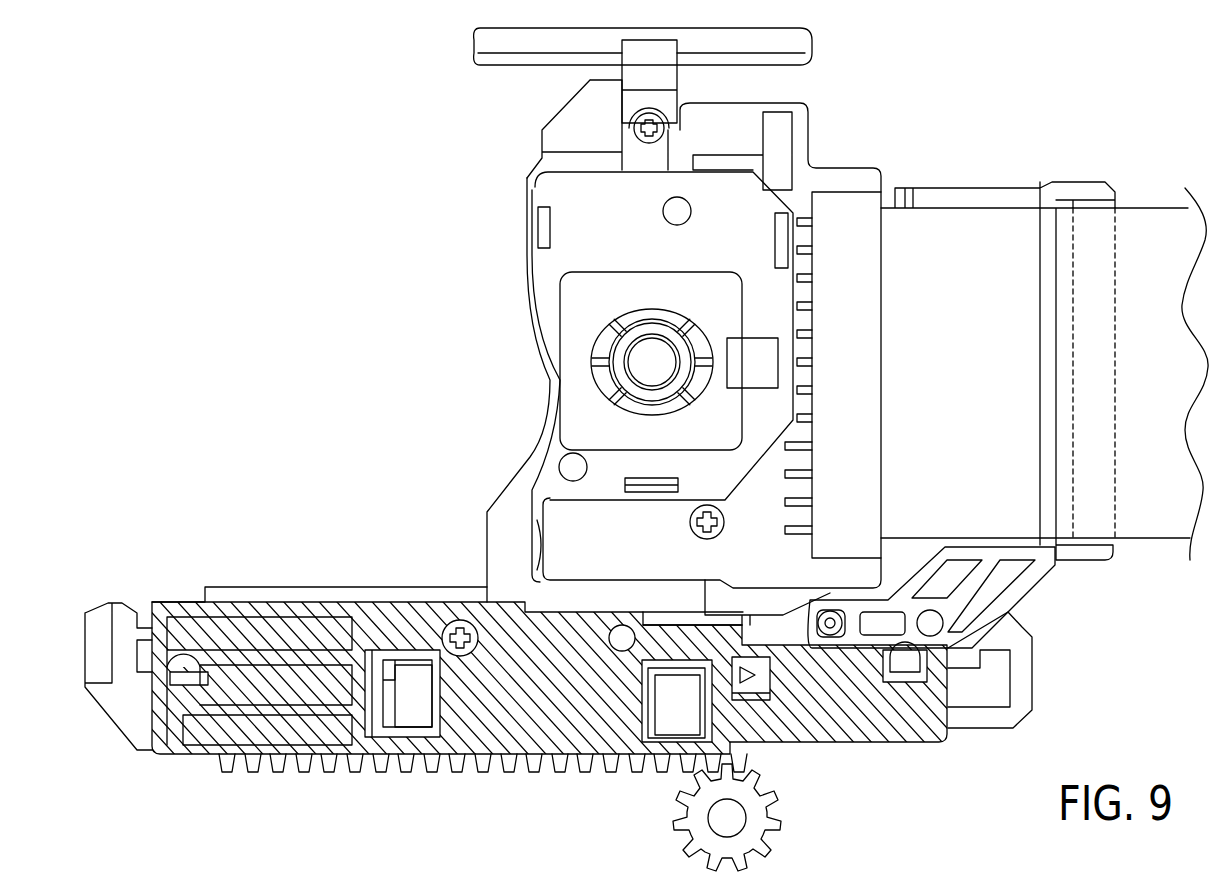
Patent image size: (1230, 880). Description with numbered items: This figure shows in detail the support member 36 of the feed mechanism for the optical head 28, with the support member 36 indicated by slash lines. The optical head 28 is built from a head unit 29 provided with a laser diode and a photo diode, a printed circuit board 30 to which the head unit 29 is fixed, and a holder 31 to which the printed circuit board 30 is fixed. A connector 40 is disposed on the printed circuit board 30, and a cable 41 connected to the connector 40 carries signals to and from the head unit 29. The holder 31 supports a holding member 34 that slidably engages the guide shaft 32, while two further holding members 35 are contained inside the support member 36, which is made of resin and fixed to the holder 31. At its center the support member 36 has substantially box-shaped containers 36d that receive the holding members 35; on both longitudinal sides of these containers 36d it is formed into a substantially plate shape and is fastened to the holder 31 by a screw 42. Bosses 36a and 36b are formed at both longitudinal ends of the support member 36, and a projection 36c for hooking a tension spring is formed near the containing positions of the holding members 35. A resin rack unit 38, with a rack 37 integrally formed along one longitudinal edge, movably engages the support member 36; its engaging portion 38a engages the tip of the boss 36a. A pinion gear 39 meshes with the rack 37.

The optical head 28 is at (547, 368).
The head unit 29 is at (545, 258).
The printed circuit board 30 is at (803, 130).
The holder 31 is at (563, 118).
The guide shaft 32 is at (478, 44).
The holding member 34 is at (665, 74).
The holding member 35 is at (420, 725).
The support member 36 is at (545, 740).
The boss 36a is at (900, 677).
The boss 36b is at (182, 677).
The projection 36c is at (748, 680).
The container 36d is at (370, 727).
The rack 37 is at (282, 770).
The rack unit 38 is at (130, 605).
The engaging portion 38a is at (963, 660).
The pinion gear 39 is at (770, 818).
The connector 40 is at (865, 340).
The cable 41 is at (1152, 222).
The screw 42 is at (445, 607).